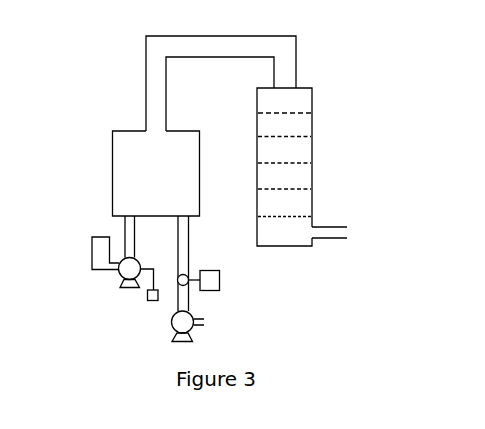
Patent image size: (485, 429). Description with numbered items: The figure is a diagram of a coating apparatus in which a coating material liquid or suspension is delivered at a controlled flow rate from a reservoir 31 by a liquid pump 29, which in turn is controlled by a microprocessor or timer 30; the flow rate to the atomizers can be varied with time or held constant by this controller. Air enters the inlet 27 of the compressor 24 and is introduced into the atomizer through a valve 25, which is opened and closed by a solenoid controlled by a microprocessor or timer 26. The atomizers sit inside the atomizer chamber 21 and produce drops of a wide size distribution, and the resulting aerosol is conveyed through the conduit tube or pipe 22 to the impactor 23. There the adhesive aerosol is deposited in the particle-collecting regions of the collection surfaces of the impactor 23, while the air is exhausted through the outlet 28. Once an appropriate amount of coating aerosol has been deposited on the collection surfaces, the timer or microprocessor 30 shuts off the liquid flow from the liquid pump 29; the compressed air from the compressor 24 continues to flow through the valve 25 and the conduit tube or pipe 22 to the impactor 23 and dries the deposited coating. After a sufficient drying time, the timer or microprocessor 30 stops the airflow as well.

The atomizer chamber 21 is at (200, 172).
The conduit tube or pipe 22 is at (200, 58).
The impactor 23 is at (312, 147).
The compressor 24 is at (172, 332).
The valve 25 is at (188, 275).
The timer 26 is at (220, 282).
The inlet 27 is at (205, 322).
The outlet 28 is at (348, 231).
The liquid pump 29 is at (117, 284).
The microprocessor or timer 30 is at (147, 297).
The reservoir 31 is at (90, 254).